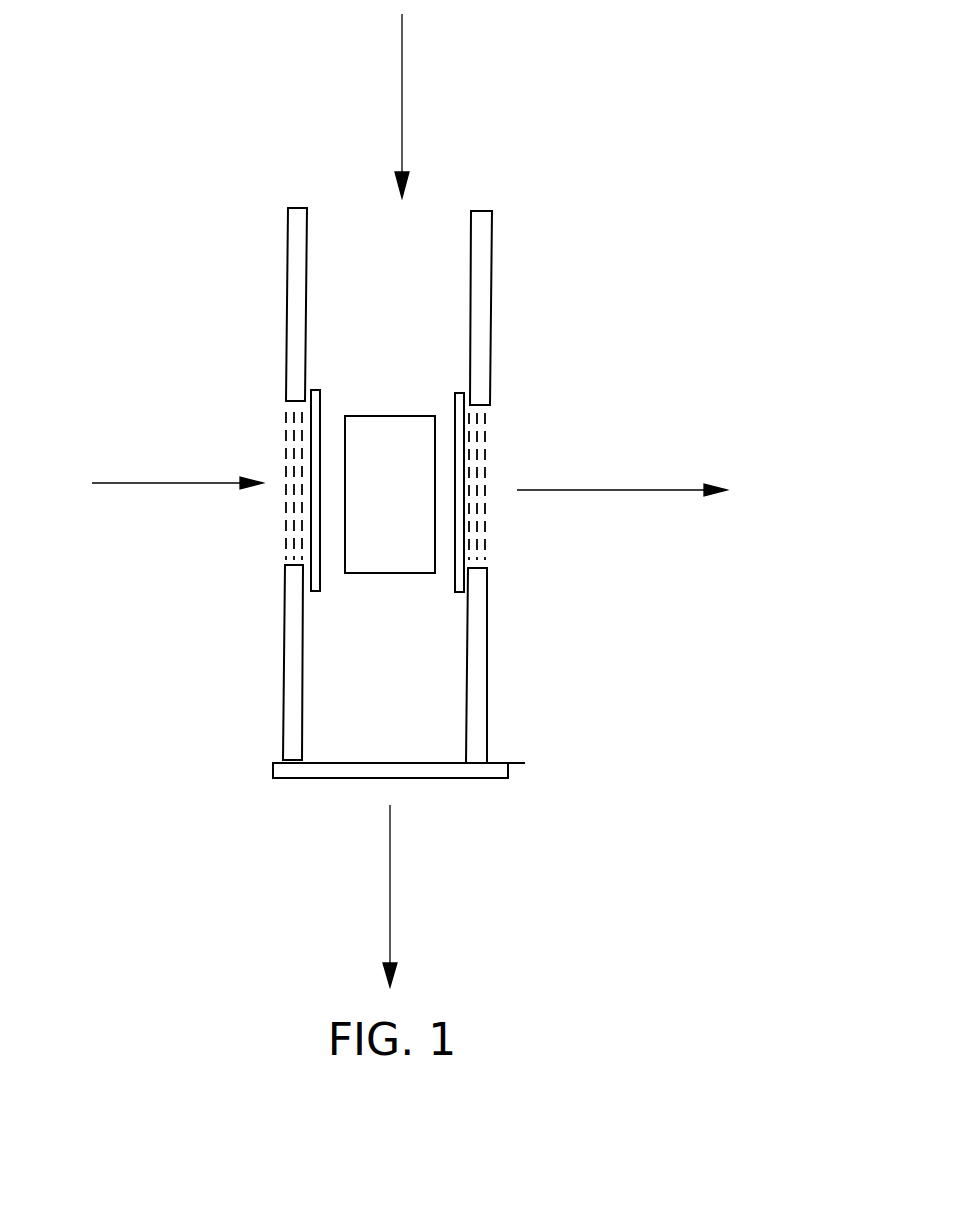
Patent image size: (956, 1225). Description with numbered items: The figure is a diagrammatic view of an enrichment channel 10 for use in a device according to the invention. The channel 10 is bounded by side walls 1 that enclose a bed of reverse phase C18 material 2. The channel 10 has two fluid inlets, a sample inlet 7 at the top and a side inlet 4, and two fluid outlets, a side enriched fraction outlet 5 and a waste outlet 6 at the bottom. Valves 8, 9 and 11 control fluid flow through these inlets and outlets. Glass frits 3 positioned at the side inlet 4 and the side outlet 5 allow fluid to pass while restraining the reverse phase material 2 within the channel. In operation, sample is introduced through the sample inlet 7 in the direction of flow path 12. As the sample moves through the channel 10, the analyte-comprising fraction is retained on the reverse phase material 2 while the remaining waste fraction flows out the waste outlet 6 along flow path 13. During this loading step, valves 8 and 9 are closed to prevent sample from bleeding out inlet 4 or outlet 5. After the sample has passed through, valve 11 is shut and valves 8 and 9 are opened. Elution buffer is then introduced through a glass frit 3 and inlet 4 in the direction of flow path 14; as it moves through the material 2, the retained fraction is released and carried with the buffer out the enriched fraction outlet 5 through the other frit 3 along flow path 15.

The side walls 1 is at (297, 280).
The reverse phase C18 material 2 is at (380, 510).
The glass frits 3 is at (283, 453).
The inlet 4 is at (282, 547).
The enriched fraction outlet 5 is at (489, 533).
The waste outlet 6 is at (417, 767).
The sample inlet 7 is at (443, 202).
The valve 8 is at (317, 573).
The valve 9 is at (452, 577).
The enrichment channel 10 is at (578, 120).
The valve 11 is at (360, 772).
The flow path 12 is at (421, 106).
The flow path 13 is at (414, 896).
The flow path 14 is at (145, 483).
The flow path 15 is at (647, 497).